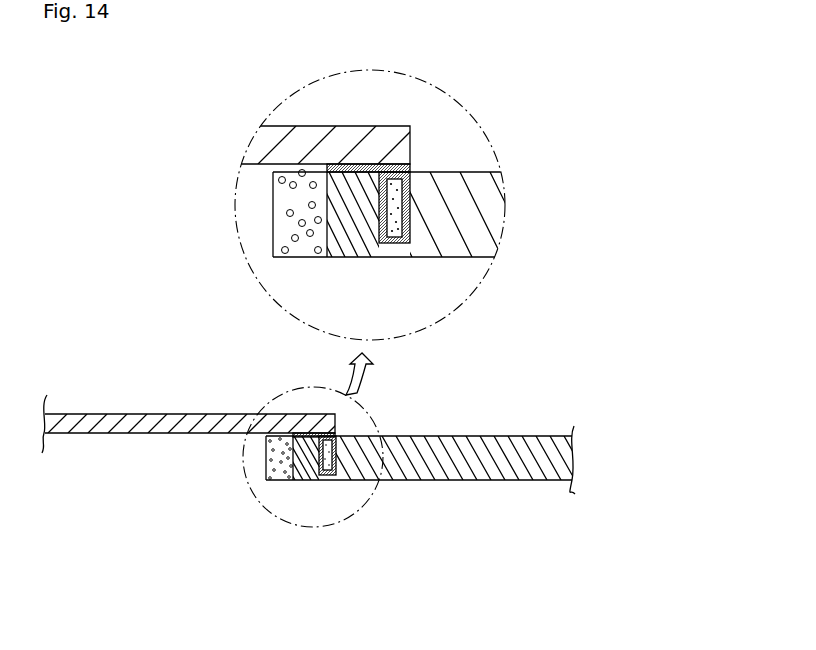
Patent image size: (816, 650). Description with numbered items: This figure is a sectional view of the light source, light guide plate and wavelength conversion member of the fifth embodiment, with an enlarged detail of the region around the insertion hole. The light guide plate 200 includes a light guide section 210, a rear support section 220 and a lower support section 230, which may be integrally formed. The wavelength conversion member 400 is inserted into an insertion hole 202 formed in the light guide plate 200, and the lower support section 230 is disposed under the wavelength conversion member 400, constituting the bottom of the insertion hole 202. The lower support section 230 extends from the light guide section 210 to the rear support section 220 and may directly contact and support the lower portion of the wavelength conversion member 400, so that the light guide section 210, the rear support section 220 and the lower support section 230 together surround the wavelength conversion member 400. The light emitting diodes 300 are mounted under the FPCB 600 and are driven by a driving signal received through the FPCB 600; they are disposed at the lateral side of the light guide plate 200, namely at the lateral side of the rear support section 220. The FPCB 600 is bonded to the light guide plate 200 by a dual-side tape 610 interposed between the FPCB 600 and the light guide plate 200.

The FPCB 600 is at (134, 414).
The dual-side tape 610 is at (300, 434).
The light guide plate 200 is at (303, 563).
The light guide section 210 is at (407, 482).
The rear support section 220 is at (310, 482).
The lower support section 230 is at (395, 258).
The light emitting diodes 300 is at (282, 482).
The wavelength conversion member 400 is at (334, 488).
The insertion hole 202 is at (410, 126).